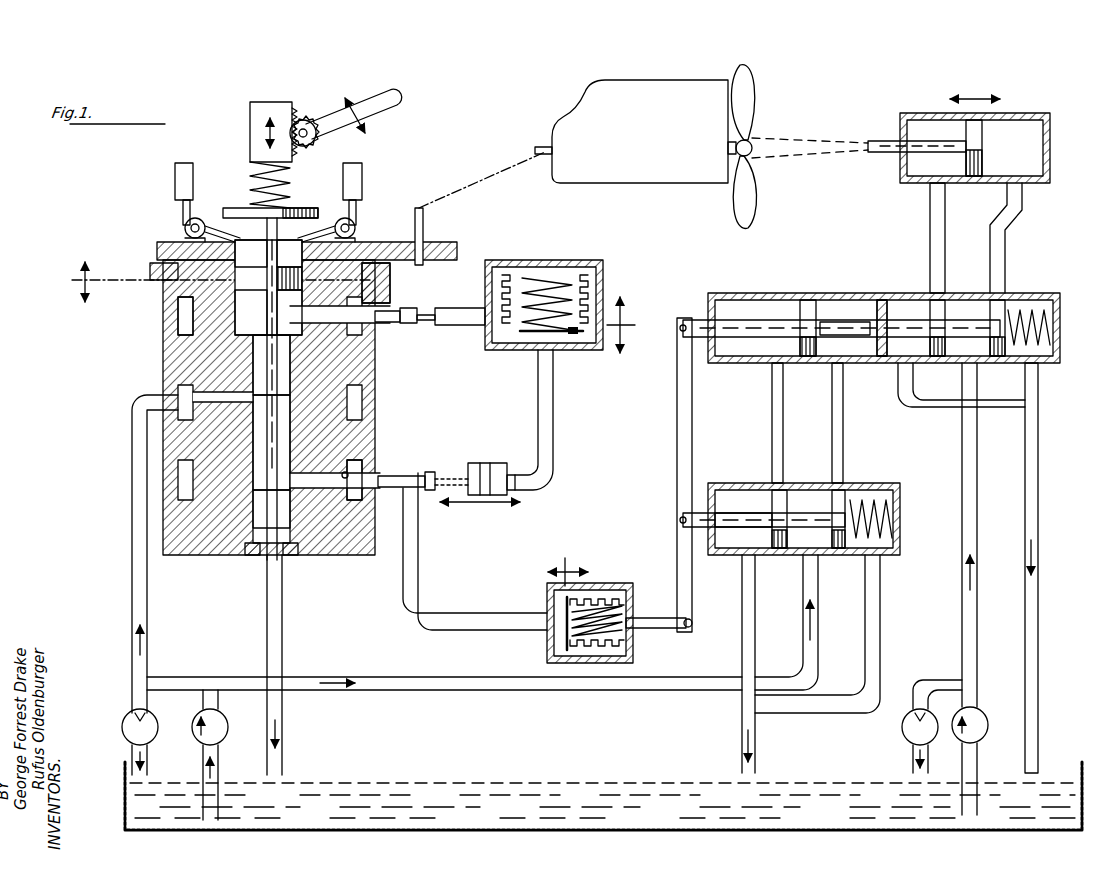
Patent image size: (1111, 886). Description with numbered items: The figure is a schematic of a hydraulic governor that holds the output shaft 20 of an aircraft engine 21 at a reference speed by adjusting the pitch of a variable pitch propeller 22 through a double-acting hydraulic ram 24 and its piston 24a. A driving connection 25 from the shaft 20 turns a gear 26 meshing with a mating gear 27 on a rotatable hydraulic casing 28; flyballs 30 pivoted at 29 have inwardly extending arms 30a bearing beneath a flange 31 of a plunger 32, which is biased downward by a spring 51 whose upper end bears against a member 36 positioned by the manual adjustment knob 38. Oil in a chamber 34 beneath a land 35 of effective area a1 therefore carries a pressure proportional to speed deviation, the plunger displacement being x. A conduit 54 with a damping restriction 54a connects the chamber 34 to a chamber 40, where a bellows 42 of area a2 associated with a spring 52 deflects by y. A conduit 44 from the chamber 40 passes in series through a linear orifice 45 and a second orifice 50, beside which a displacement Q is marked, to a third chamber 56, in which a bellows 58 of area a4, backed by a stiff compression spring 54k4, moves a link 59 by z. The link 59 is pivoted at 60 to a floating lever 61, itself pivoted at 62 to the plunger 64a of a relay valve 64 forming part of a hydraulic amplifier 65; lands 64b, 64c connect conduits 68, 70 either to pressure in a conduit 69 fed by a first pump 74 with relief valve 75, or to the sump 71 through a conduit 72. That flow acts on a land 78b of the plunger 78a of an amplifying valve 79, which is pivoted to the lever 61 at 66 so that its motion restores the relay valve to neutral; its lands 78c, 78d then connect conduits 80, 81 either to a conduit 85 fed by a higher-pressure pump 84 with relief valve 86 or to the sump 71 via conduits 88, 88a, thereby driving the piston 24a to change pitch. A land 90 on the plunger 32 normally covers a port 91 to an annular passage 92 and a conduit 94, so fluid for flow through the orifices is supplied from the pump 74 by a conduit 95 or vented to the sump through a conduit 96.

The output shaft 20 is at (540, 158).
The engine 21 is at (598, 101).
The variable pitch propeller 22 is at (753, 100).
The double-acting hydraulic ram 24 is at (1052, 136).
The piston 24a is at (982, 144).
The driving connection 25 is at (480, 180).
The gear 26 is at (425, 243).
The mating gear 27 is at (157, 250).
The rotatable hydraulic casing 28 is at (380, 291).
The pivot 29 is at (190, 226).
The flyballs 30 is at (180, 183).
The inwardly extending arms 30a is at (251, 253).
The flange 31 is at (295, 210).
The plunger 32 is at (284, 389).
The chamber 34 is at (251, 312).
The land 35 is at (289, 265).
The rack 36 is at (250, 114).
The manual adjustment knob 38 is at (400, 97).
The chamber 40 is at (510, 335).
The bellows 42 is at (588, 283).
The conduit 44 is at (553, 410).
The orifice 45 is at (430, 490).
The second orifice 50 is at (480, 465).
The spring S1 51 is at (255, 182).
The spring S2 52 is at (555, 278).
The conduit 54 is at (450, 326).
The restriction 54a is at (425, 314).
The compression spring S4 54k4 is at (630, 628).
The third fluid chamber 56 is at (583, 655).
The bellows 58 is at (606, 598).
The link 59 is at (650, 612).
The pivot 60 is at (693, 627).
The floating lever 61 is at (677, 410).
The pivot 62 is at (677, 520).
The hydraulic relay valve 64 is at (720, 488).
The plunger 64a is at (738, 528).
The land 64b is at (778, 501).
The land 64c is at (835, 503).
The hydraulic amplifier 65 is at (896, 447).
The upper pivot point 66 is at (686, 318).
The conduit 68 is at (832, 403).
The conduit 69 is at (383, 692).
The conduit 70 is at (772, 403).
The fluid sump 71 is at (512, 792).
The conduit 72 is at (755, 757).
The first pump 74 is at (228, 727).
The relief valve 75 is at (153, 718).
The plunger 78a is at (835, 325).
The land 78b is at (808, 305).
The land 78c is at (942, 312).
The land 78d is at (1000, 312).
The amplifying valve 79 is at (900, 292).
The conduit 80 is at (945, 205).
The conduit 81 is at (1022, 205).
The second pump 84 is at (983, 713).
The conduit 85 is at (962, 497).
The relief valve 86 is at (905, 737).
The conduit 88 is at (1040, 470).
The conduit 88a is at (938, 412).
The valve land 90 is at (271, 509).
The port 91 is at (345, 475).
The annular passage 92 is at (372, 478).
The conduit 94 is at (420, 478).
The conduit 95 is at (148, 398).
The conduit 96 is at (283, 605).
The effective area a1 is at (235, 300).
The area a2 is at (570, 332).
The area a4 is at (565, 640).
The displacement x is at (212, 282).
The displacement y is at (628, 326).
The displacement z is at (569, 562).
The displacement Q is at (473, 505).